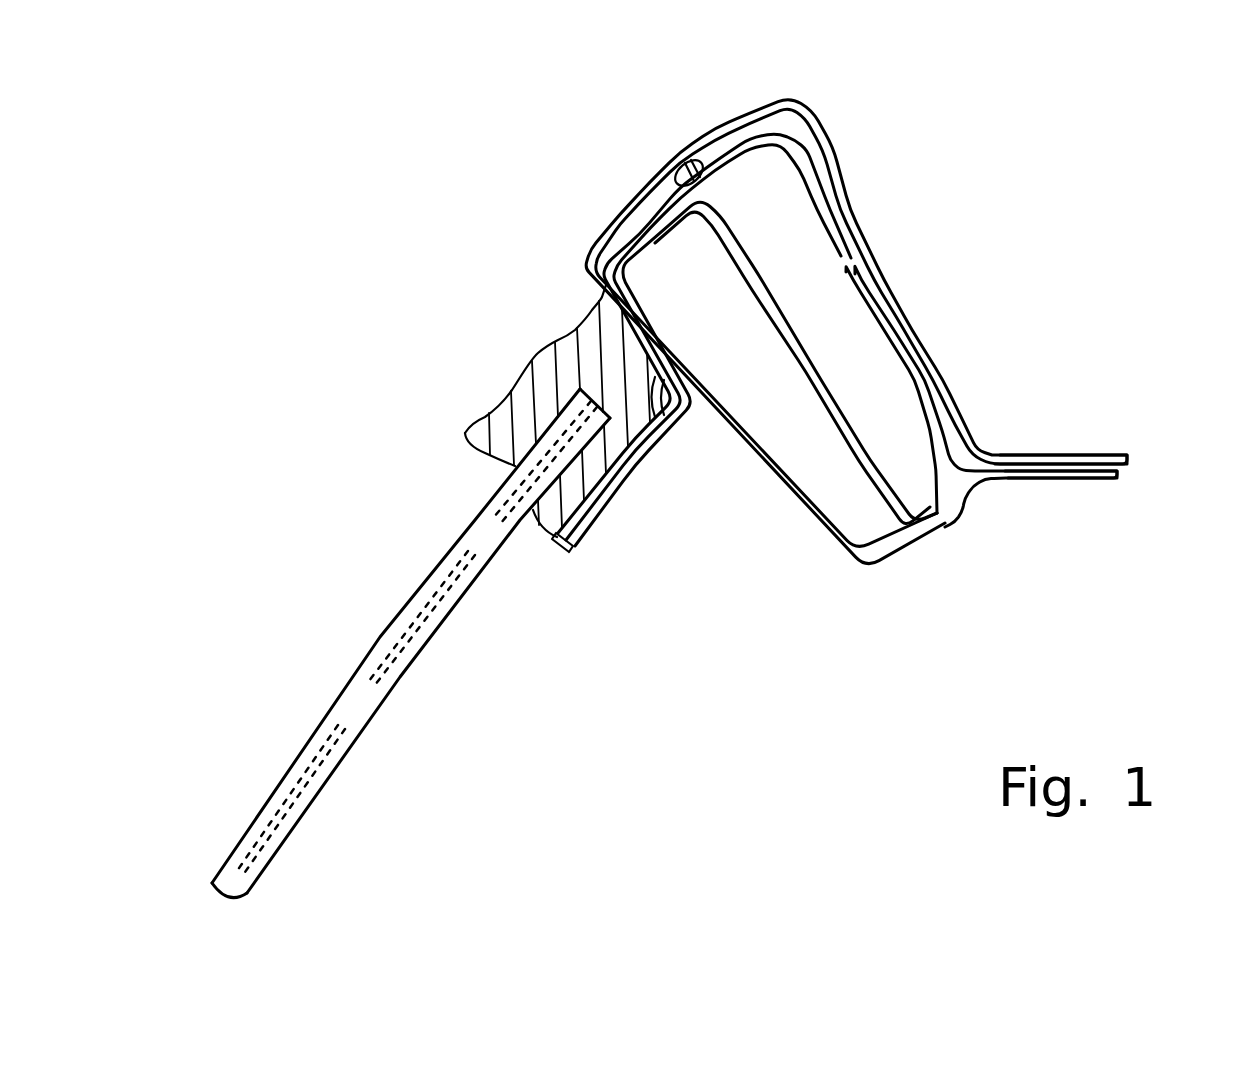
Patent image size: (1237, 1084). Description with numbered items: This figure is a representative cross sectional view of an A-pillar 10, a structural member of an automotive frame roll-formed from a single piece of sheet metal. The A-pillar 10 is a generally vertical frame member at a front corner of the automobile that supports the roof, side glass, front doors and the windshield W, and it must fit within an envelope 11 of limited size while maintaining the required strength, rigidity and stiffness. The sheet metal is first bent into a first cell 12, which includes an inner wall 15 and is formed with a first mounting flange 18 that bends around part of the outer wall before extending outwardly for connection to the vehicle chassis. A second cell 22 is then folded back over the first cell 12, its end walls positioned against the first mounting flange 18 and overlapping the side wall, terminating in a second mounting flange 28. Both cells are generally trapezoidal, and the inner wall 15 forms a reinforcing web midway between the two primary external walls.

The A-pillar 10 is at (868, 637).
The envelope 11 is at (650, 180).
The first cell 12 is at (766, 422).
The inner wall 15 is at (868, 462).
The first mounting flange 18 is at (1100, 451).
The second cell 22 is at (916, 461).
The second mounting flange 28 is at (580, 538).
The windshield W is at (410, 601).